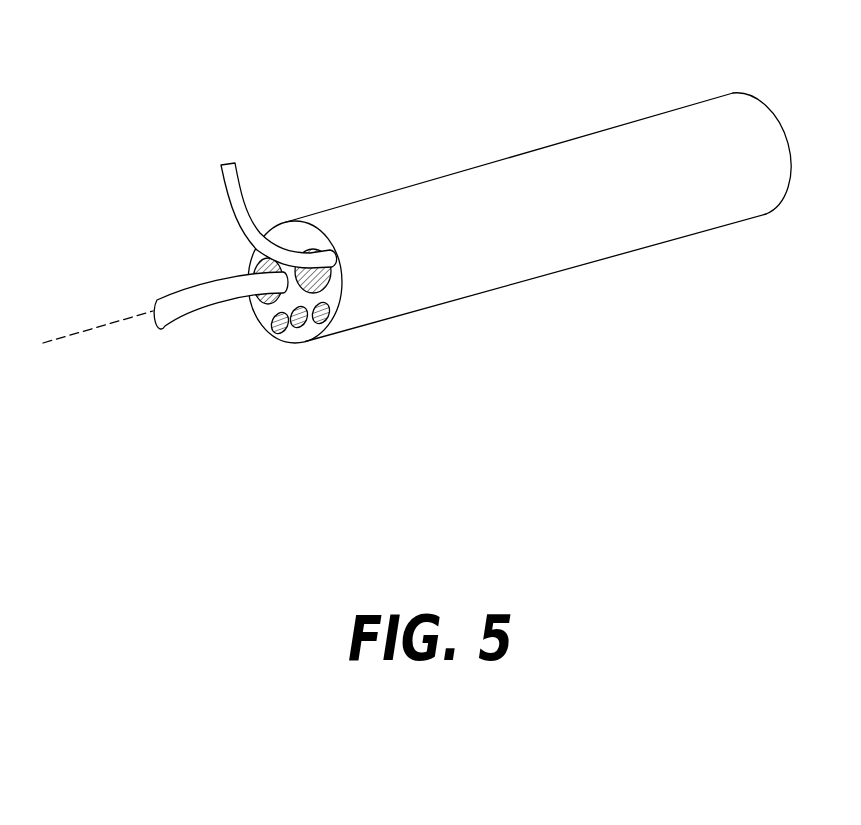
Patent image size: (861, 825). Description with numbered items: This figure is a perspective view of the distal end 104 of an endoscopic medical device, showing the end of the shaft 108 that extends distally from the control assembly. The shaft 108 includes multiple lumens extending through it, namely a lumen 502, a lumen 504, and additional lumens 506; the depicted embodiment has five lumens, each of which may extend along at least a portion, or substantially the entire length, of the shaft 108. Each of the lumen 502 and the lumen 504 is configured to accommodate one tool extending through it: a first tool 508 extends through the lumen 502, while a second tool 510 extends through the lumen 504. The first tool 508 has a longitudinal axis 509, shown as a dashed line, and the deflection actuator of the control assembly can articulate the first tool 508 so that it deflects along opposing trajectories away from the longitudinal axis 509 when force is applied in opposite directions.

The distal end 104 is at (417, 271).
The shaft 108 is at (588, 136).
The lumen 502 is at (252, 268).
The lumen 504 is at (342, 287).
The additional lumens 506 is at (318, 324).
The first tool 508 is at (192, 315).
The longitudinal axis 509 is at (80, 330).
The second tool 510 is at (238, 177).